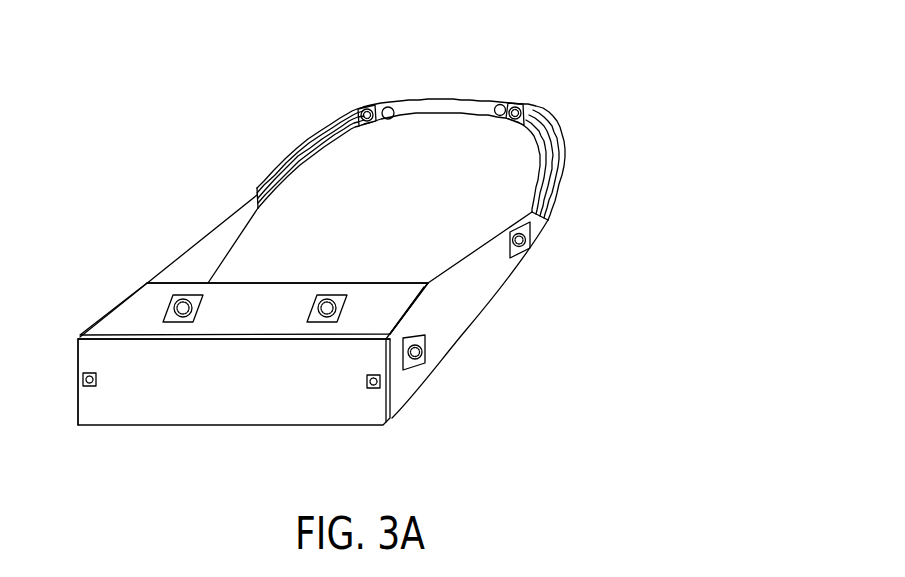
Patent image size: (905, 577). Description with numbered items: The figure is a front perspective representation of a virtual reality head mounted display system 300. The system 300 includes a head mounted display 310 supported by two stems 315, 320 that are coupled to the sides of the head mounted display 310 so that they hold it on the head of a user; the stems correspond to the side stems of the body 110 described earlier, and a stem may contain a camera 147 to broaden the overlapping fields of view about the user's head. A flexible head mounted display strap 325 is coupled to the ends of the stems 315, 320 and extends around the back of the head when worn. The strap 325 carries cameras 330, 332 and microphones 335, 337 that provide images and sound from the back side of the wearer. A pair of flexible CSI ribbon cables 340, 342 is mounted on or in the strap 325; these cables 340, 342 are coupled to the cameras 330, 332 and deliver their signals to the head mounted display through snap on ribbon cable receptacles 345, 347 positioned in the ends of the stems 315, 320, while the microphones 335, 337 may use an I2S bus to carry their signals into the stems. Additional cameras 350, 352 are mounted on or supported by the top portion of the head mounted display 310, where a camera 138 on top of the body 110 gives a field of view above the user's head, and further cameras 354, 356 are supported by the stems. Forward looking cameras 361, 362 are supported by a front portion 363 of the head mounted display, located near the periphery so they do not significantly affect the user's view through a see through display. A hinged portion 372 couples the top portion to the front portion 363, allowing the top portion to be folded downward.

The virtual reality head mounted display system 300 is at (668, 65).
The body 110 is at (372, 283).
The camera 138 is at (282, 298).
The camera 147 is at (467, 267).
The head mounted display 310 is at (151, 426).
The stem 315 is at (516, 272).
The stem 320 is at (232, 210).
The head mounted display strap 325 is at (566, 157).
The camera 330 is at (358, 110).
The camera 332 is at (525, 110).
The microphone 335 is at (388, 107).
The microphone 337 is at (500, 104).
The CSI ribbon cable 340 is at (561, 127).
The CSI ribbon cable 342 is at (294, 149).
The snap on ribbon cable receptacle 345 is at (550, 220).
The snap on ribbon cable receptacle 347 is at (258, 190).
The camera 350 is at (173, 323).
The camera 352 is at (313, 323).
The camera 354 is at (427, 352).
The camera 356 is at (531, 238).
The forward looking camera 361 is at (78, 380).
The forward looking camera 362 is at (367, 380).
The front portion 363 is at (79, 352).
The hinged portion 372 is at (237, 339).